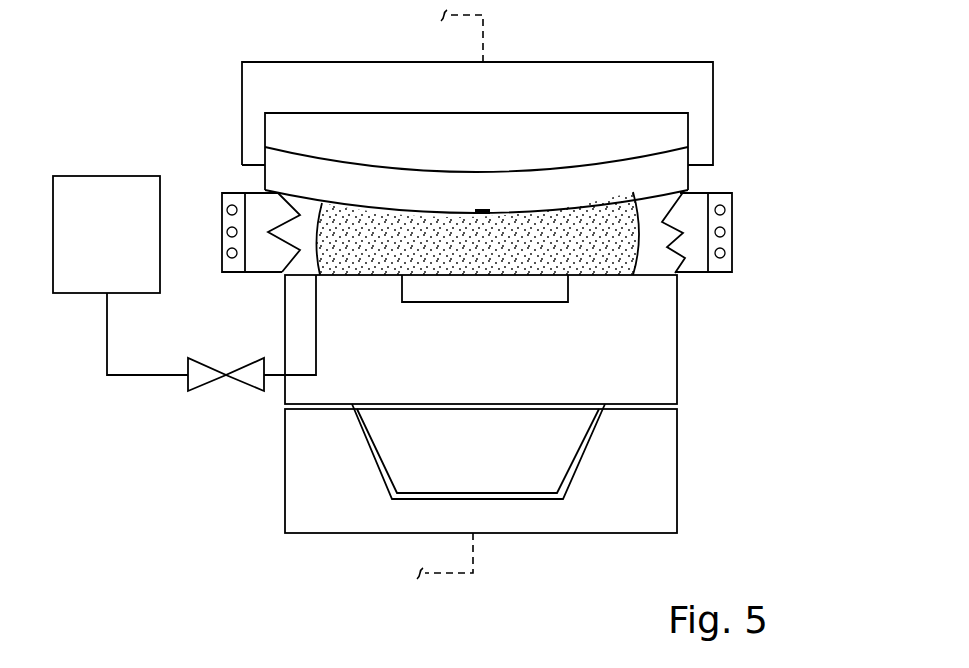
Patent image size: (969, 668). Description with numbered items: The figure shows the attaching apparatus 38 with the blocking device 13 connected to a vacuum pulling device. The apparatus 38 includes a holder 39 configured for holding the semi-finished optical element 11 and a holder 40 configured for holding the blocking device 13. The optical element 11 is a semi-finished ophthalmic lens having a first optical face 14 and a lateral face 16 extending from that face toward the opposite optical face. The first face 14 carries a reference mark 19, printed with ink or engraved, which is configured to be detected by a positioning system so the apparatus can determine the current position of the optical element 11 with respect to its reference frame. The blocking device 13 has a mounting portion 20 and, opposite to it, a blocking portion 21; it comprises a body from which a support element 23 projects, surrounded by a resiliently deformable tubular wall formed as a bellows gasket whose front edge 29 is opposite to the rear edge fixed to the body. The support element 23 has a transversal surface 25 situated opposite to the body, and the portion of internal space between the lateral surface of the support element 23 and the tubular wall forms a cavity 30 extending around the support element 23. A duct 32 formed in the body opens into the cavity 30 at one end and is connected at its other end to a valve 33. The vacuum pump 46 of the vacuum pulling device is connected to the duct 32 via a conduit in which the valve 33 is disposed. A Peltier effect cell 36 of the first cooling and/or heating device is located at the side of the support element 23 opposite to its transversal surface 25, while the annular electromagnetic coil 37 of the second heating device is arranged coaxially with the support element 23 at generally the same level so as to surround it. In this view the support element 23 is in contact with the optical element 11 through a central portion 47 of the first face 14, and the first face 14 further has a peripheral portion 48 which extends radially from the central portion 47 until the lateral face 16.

The semi-finished optical element 11 is at (688, 182).
The blocking device 13 is at (678, 372).
The first optical face 14 is at (451, 224).
The lateral face 16 is at (265, 156).
The reference mark 19 is at (481, 209).
The mounting portion 20 is at (720, 397).
The blocking portion 21 is at (772, 192).
The support element 23 is at (300, 241).
The transversal surface 25 is at (388, 196).
The front edge 29 is at (278, 192).
The cavity 30 is at (315, 207).
The duct 32 is at (317, 340).
The valve 33 is at (204, 389).
The Peltier effect cell 36 is at (560, 302).
The electromagnetic coil 37 is at (733, 240).
The apparatus 38 is at (140, 507).
The holder 39 is at (713, 97).
The holder 40 is at (678, 458).
The vacuum pump 46 is at (105, 176).
The central portion 47 is at (467, 214).
The peripheral portion 48 is at (275, 205).